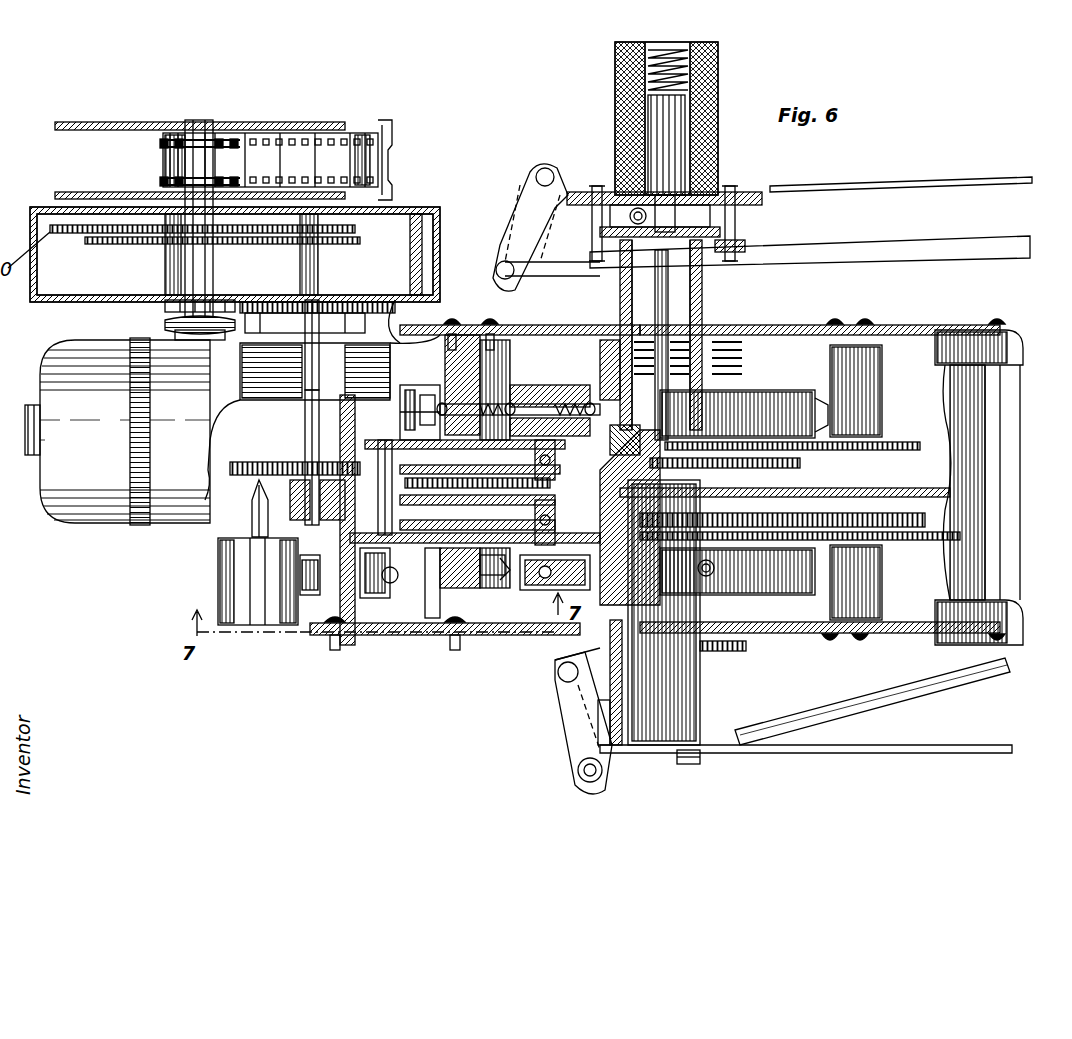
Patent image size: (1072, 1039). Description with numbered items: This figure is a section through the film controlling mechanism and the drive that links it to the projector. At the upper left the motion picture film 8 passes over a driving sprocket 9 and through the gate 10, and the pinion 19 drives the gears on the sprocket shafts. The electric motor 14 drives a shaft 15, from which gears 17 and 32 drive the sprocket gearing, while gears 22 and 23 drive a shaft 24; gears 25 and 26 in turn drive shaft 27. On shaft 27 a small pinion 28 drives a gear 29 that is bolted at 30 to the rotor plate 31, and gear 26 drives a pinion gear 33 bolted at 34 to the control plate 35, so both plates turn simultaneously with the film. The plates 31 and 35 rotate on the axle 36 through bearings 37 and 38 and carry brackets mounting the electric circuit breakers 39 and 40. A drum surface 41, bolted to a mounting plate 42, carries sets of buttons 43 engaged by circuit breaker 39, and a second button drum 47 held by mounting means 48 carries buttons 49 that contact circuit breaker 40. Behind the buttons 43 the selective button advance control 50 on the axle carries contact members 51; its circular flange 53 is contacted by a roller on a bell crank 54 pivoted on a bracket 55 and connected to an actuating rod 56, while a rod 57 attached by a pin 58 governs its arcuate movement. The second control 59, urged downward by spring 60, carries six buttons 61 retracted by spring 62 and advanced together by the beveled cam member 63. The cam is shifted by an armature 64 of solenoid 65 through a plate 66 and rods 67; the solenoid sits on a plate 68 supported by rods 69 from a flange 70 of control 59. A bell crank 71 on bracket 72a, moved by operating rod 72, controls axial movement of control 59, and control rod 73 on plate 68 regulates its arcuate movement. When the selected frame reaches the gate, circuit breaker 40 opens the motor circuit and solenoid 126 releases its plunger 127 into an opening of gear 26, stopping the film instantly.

The motion picture film 8 is at (352, 150).
The driving sprocket 9 is at (162, 182).
The gate 10 is at (392, 160).
The electric motor 14 is at (105, 510).
The shaft 15 is at (320, 355).
The gear 17 is at (95, 244).
The pinion 19 is at (185, 258).
The gear 22 is at (322, 307).
The gear 23 is at (396, 310).
The shaft 24 is at (305, 418).
The gear 25 is at (318, 465).
The gear 26 is at (232, 470).
The shaft 27 is at (388, 460).
The small pinion 28 is at (405, 500).
The gear 29 is at (458, 525).
The bolt 30 is at (575, 540).
The rotor plate 31 is at (360, 538).
The gear 32 is at (355, 242).
The pinion gear 33 is at (470, 488).
The bolt 34 is at (790, 488).
The control plate 35 is at (530, 410).
The axle 36 is at (655, 450).
The bearing 37 is at (650, 545).
The bearing 38 is at (645, 430).
The electric circuit breaker 39 is at (410, 598).
The electric circuit breaker 40 is at (400, 400).
The drum surface 41 is at (455, 600).
The mounting plate 42 is at (490, 635).
The buttons 43 is at (520, 585).
The second button drum 47 is at (480, 370).
The mounting means 48 is at (458, 328).
The buttons 49 is at (470, 405).
The selective button advance control 50 is at (612, 700).
The contact members 51 is at (712, 572).
The circular flange 53 is at (748, 646).
The bell crank 54 is at (578, 733).
The bracket 55 is at (556, 668).
The actuating rod 56 is at (912, 690).
The rod 57 is at (918, 752).
The pin 58 is at (683, 765).
The selective button advance control 59 is at (775, 400).
The spring 60 is at (740, 345).
The buttons 61 is at (540, 430).
The spring 62 is at (632, 360).
The beveled cam member 63 is at (668, 360).
The armature 64 is at (670, 122).
The solenoid 65 is at (712, 82).
The plate 66 is at (700, 195).
The rods 67 is at (700, 300).
The plate 68 is at (597, 190).
The rods 69 is at (740, 220).
The flange 70 is at (745, 246).
The bell crank 71 is at (512, 228).
The operating rod 72 is at (947, 248).
The bracket 72a is at (560, 300).
The control rod 73 is at (925, 180).
The solenoid 126 is at (232, 570).
The plunger 127 is at (252, 528).